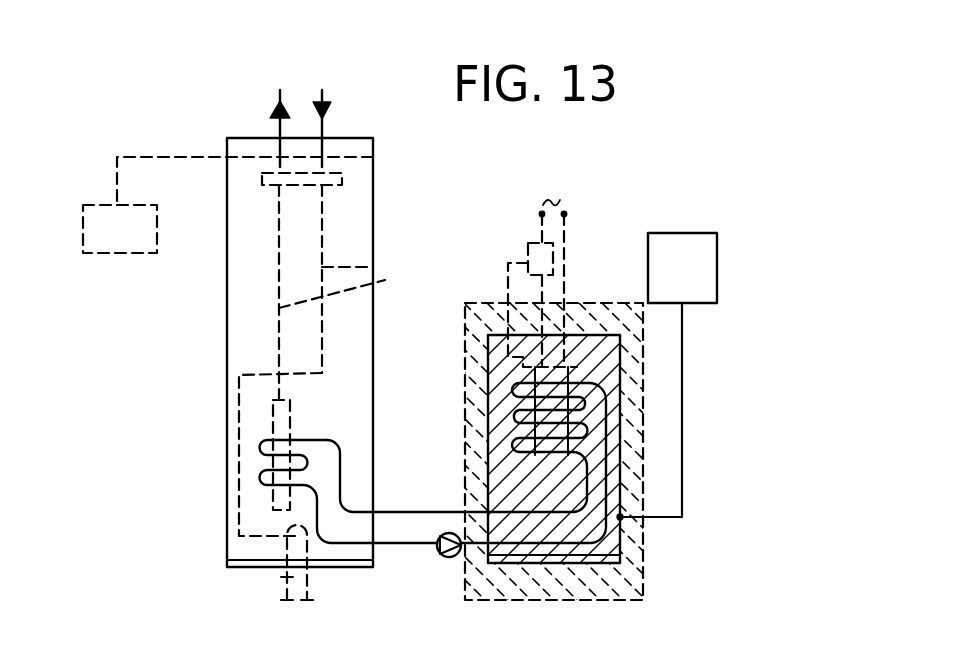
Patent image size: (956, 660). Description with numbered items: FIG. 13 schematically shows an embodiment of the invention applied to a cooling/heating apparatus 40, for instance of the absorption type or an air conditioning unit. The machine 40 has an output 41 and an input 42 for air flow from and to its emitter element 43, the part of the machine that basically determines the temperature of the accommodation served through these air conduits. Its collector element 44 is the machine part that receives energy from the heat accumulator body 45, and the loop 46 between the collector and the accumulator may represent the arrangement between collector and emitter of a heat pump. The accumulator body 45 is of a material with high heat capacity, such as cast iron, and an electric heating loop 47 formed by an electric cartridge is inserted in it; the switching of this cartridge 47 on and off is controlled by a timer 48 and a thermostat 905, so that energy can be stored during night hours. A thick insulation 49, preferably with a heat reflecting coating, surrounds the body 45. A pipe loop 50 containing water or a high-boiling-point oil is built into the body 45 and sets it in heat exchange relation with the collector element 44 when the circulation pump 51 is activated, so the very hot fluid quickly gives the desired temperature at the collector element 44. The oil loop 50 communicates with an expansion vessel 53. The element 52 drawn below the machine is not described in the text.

The cooling/heating apparatus 40 is at (375, 243).
The output 41 is at (278, 122).
The input 42 is at (324, 122).
The emitter element 43 is at (342, 172).
The collector element 44 is at (275, 425).
The heat accumulator body 45 is at (560, 490).
The loop 46 is at (373, 265).
The electric heating loop 47 is at (517, 437).
The timer 48 is at (525, 247).
The insulation 49 is at (596, 590).
The pipe loop 50 is at (342, 463).
The circulation pump 51 is at (439, 554).
The air duct 52 is at (271, 579).
The expansion vessel 53 is at (117, 255).
The thermostat 905 is at (508, 263).